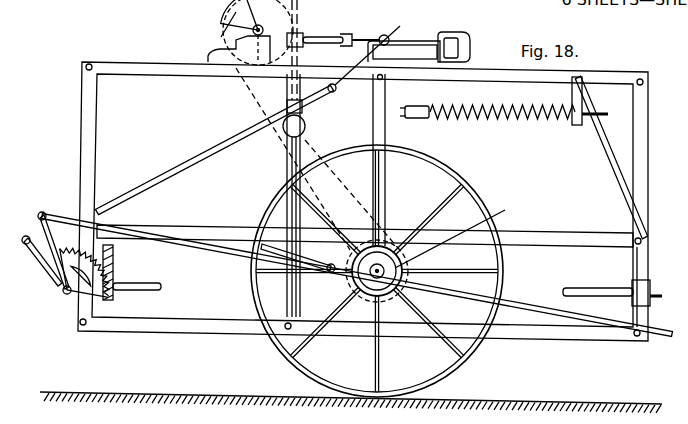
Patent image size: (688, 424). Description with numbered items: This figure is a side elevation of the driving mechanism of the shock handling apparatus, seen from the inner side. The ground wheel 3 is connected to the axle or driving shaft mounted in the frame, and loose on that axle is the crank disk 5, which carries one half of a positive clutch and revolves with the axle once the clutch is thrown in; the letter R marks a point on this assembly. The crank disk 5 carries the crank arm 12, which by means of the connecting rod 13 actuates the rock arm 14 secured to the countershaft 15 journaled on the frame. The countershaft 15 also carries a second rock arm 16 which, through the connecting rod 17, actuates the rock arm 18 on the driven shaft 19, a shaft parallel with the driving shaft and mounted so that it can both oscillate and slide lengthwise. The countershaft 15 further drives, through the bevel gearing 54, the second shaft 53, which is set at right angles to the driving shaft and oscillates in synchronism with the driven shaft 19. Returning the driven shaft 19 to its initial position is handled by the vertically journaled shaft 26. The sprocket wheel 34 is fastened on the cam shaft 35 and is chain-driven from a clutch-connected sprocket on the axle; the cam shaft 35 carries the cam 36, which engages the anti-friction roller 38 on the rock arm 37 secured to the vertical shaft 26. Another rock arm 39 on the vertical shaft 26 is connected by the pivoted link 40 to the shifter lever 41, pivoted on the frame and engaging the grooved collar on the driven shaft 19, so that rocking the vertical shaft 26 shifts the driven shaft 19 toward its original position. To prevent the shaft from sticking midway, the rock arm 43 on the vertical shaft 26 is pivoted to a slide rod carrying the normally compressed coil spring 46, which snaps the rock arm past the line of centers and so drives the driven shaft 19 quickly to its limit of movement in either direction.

The ground wheel 3 is at (473, 357).
The crank disk 5 is at (386, 240).
The ratchet R is at (456, 232).
The crank arm 12 is at (336, 303).
The connecting rod 13 is at (197, 250).
The rock arm 14 is at (58, 284).
The countershaft 15 is at (66, 295).
The second rock arm 16 is at (36, 255).
The connecting rod 17 is at (232, 143).
The rock arm 18 is at (337, 86).
The driven shaft 19 is at (419, 37).
The vertical shaft 26 is at (286, 203).
The sprocket wheel 34 is at (218, 32).
The cam shaft 35 is at (300, 30).
The cam 36 is at (250, 8).
The rock arm 37 is at (269, 24).
The anti-friction roller 38 is at (230, 20).
The rock arm 39 is at (327, 31).
The pivoted link 40 is at (366, 26).
The shifter lever 41 is at (377, 46).
The rock arm 43 is at (384, 118).
The coil spring 46 is at (468, 120).
The second shaft 53 is at (146, 290).
The bevel gearing 54 is at (114, 264).